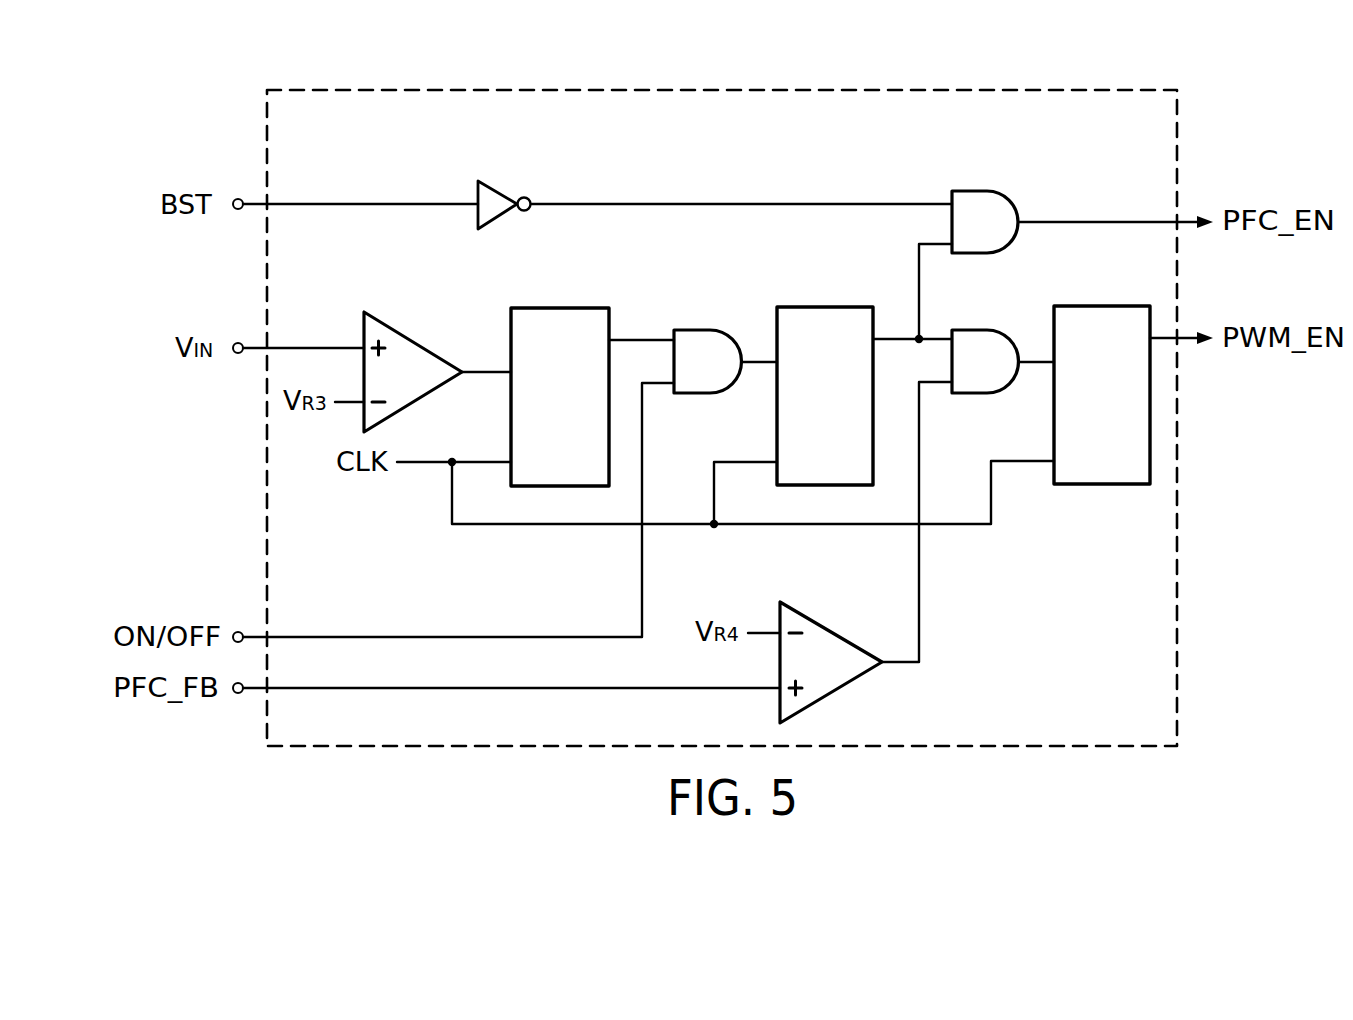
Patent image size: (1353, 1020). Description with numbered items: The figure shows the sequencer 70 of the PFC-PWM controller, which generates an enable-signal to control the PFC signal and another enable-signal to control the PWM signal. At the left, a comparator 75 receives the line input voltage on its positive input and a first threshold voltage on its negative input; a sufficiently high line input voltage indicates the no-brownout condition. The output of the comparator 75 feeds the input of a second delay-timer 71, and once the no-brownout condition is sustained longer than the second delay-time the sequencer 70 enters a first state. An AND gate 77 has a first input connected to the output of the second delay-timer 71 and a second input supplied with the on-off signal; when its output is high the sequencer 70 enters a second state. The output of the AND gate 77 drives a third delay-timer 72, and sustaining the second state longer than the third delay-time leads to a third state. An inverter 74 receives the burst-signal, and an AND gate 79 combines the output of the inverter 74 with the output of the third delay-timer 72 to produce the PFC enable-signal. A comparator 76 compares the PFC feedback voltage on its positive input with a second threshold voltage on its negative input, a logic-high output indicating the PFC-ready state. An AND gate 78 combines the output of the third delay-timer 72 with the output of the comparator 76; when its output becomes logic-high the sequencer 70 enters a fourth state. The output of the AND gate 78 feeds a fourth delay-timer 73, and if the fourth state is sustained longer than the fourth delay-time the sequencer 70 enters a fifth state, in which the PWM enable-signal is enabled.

The sequencer 70 is at (1179, 135).
The second delay-timer 71 is at (553, 299).
The third delay-timer 72 is at (821, 299).
The fourth delay-timer 73 is at (1095, 490).
The inverter 74 is at (497, 184).
The comparator 75 is at (402, 328).
The comparator 76 is at (832, 628).
The AND gate 77 is at (702, 326).
The AND gate 78 is at (982, 327).
The AND gate 79 is at (976, 186).